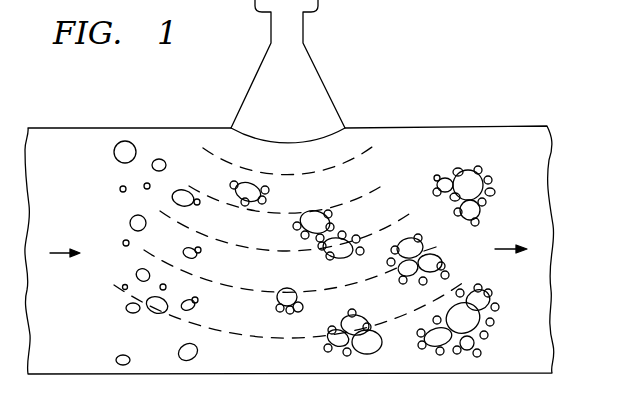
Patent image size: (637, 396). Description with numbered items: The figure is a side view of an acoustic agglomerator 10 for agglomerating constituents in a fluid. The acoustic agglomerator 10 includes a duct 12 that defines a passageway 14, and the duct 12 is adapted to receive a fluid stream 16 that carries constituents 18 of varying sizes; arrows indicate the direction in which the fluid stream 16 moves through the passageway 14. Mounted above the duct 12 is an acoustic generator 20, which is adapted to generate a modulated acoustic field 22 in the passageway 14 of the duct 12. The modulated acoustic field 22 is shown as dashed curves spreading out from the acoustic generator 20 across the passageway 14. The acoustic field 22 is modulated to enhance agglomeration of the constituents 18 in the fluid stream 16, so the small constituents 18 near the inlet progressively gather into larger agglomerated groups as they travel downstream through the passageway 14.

The acoustic agglomerator 10 is at (402, 89).
The duct 12 is at (128, 128).
The passageway 14 is at (427, 176).
The fluid stream 16 is at (123, 332).
The constituents 18 is at (113, 152).
The acoustic generator 20 is at (272, 32).
The modulated acoustic field 22 is at (383, 181).